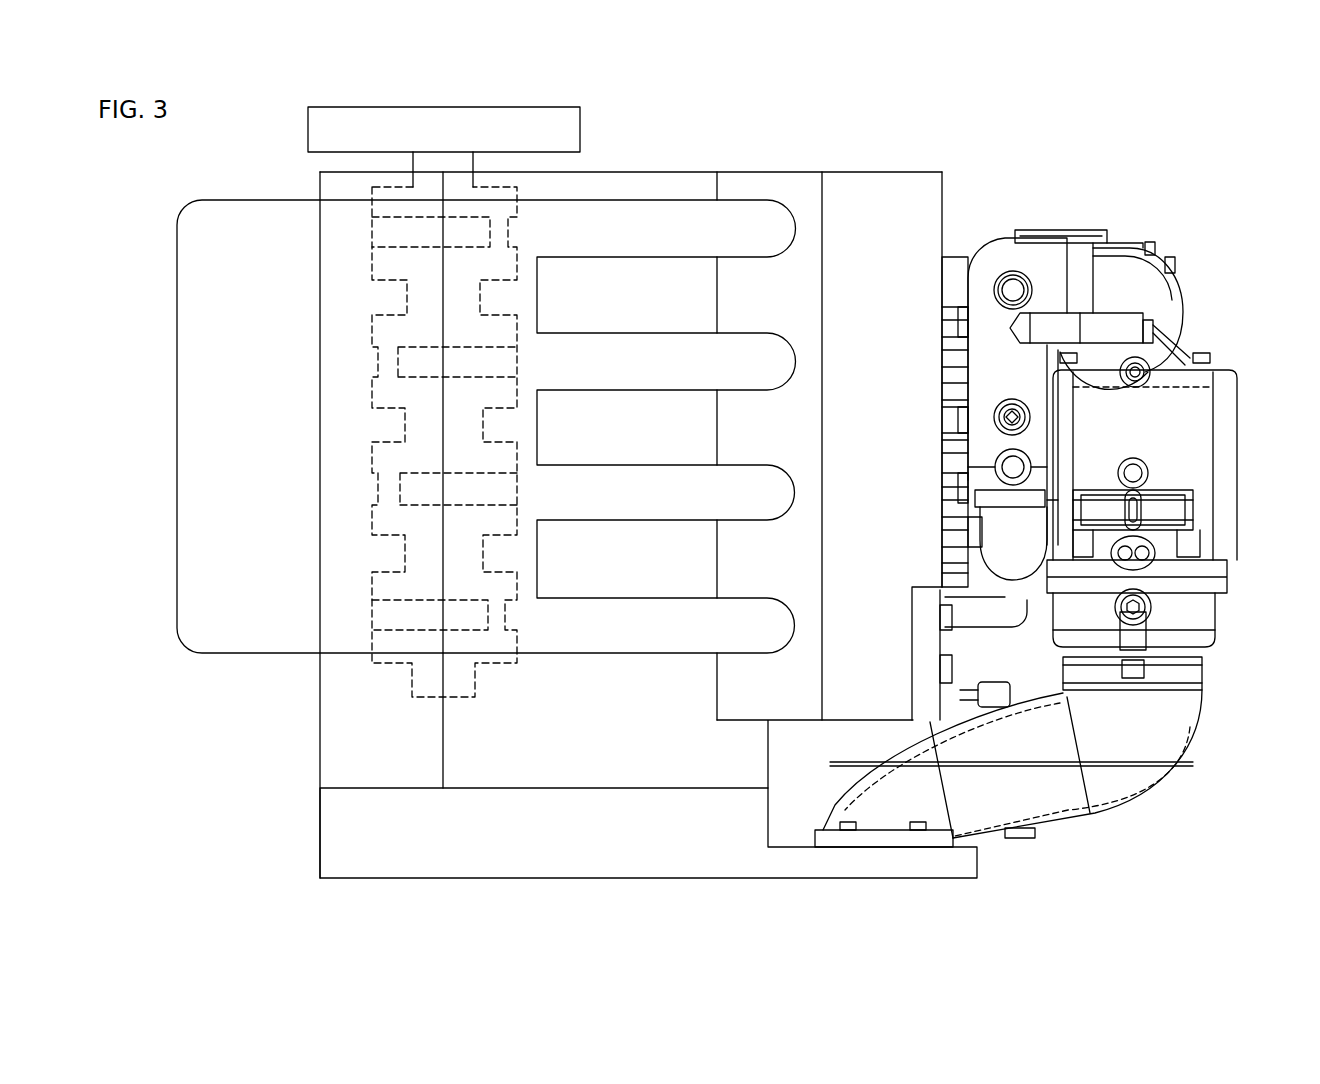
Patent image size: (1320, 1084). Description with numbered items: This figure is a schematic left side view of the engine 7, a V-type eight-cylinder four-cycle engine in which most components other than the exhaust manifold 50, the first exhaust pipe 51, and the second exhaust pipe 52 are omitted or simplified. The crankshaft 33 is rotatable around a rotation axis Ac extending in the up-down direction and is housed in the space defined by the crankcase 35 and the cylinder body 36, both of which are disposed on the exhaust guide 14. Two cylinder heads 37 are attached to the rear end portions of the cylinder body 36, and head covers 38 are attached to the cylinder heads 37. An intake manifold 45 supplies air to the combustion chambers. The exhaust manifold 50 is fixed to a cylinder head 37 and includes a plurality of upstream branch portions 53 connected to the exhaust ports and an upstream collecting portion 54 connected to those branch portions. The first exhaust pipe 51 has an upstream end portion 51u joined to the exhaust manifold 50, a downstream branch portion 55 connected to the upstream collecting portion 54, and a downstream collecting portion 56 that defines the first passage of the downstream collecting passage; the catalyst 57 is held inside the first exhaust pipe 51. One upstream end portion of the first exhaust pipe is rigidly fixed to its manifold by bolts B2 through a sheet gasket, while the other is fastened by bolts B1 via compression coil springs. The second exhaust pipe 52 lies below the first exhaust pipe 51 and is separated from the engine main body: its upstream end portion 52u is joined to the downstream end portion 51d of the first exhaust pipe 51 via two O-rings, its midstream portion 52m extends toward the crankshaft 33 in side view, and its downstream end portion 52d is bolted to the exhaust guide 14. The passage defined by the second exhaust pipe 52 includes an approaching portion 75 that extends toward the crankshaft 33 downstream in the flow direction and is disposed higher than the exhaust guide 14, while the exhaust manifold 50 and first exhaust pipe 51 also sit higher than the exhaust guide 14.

The engine 7 is at (243, 180).
The exhaust guide 14 is at (320, 840).
The crankshaft 33 is at (372, 330).
The rotation axis Ac is at (443, 296).
The crankcase 35 is at (340, 707).
The cylinder body 36 is at (458, 754).
The cylinder heads 37 is at (728, 702).
The head covers 38 is at (833, 676).
The intake manifolds 45 is at (630, 197).
The exhaust manifold 50 is at (955, 255).
The upstream branch portions 53 is at (942, 345).
The upstream collecting portion 54 is at (993, 252).
The upstream end portion 51u is at (1078, 262).
The downstream branch portions 55 is at (1160, 285).
The bolts B2 is at (1158, 247).
The bolts B1 is at (1178, 265).
The first exhaust pipe 51 is at (1238, 402).
The downstream collecting portion 56 is at (1232, 435).
The catalyst 57 is at (1225, 468).
The downstream end portion 51d is at (1200, 633).
The upstream end portion 52u is at (1205, 672).
The second exhaust pipe 52 is at (1195, 735).
The midstream portion 52m is at (1073, 797).
The downstream end portion 52d is at (935, 847).
The approaching portion 75 is at (995, 832).